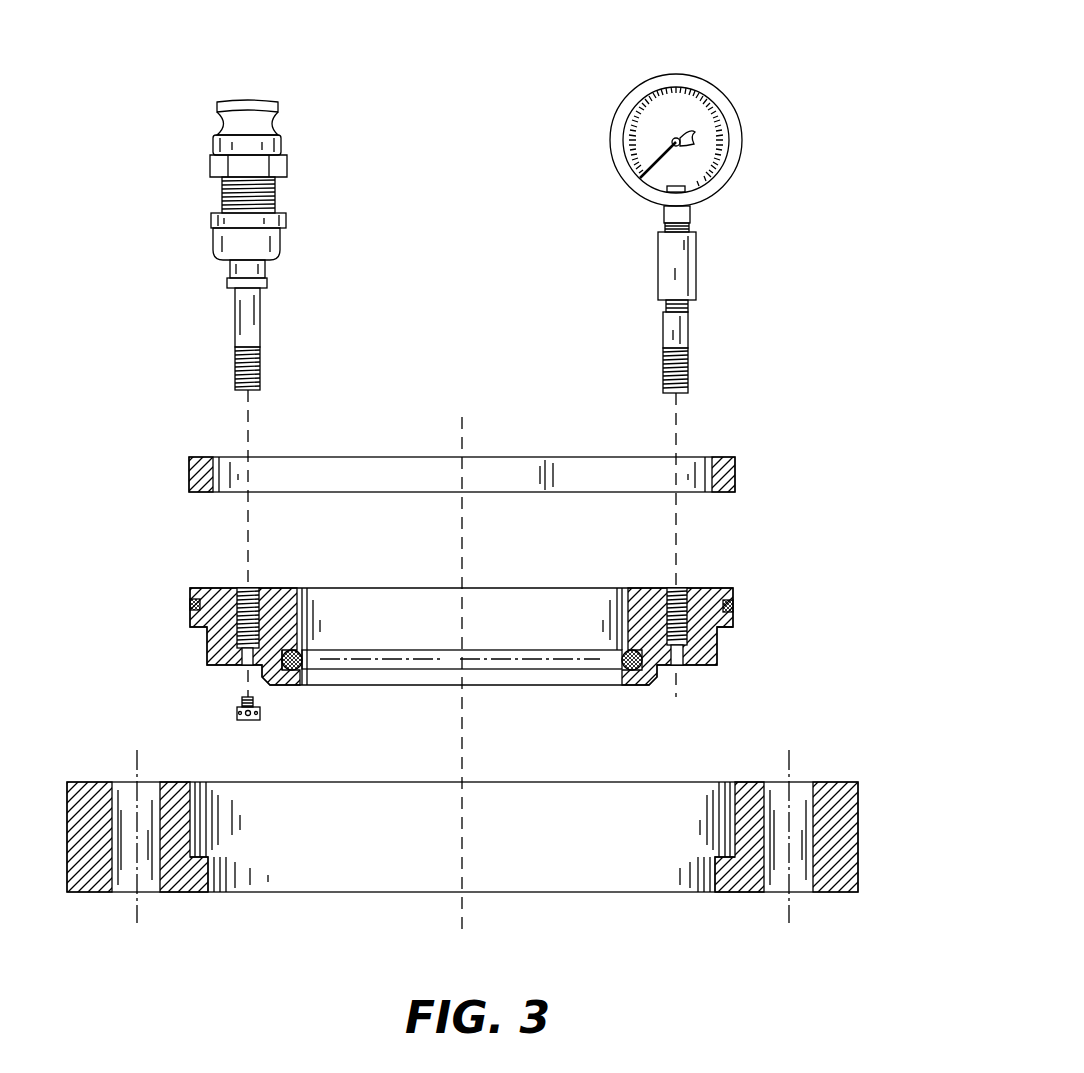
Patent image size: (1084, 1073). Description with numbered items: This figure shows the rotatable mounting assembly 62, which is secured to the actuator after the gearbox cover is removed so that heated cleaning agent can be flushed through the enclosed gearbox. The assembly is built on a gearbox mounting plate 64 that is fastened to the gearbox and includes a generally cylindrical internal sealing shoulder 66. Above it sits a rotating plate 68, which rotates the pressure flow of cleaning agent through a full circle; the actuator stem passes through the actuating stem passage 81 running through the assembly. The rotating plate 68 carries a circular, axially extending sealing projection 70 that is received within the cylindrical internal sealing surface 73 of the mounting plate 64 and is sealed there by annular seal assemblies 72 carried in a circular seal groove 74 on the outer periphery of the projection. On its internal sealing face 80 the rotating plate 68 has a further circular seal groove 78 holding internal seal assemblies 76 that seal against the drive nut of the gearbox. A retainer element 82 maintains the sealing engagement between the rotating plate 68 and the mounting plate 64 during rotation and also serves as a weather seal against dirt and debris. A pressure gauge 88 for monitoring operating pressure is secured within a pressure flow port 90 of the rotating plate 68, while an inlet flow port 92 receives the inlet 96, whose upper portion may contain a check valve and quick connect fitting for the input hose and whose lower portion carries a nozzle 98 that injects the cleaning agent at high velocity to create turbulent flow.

The rotatable mounting assembly 62 is at (147, 62).
The gearbox mounting plate 64 is at (434, 855).
The internal sealing shoulder 66 is at (188, 878).
The rotating plate 68 is at (462, 635).
The sealing projection 70 is at (190, 596).
The seal assemblies 72 is at (737, 605).
The internal sealing surface 73 is at (207, 810).
The circular seal groove 74 is at (732, 628).
The internal seal assemblies 76 is at (303, 662).
The circular seal groove 78 is at (282, 672).
The internal sealing face 80 is at (297, 590).
The actuating stem passage 81 is at (462, 420).
The retainer element 82 is at (201, 462).
The pressure gauge 88 is at (731, 110).
The pressure flow port 90 is at (672, 590).
The inlet flow port 92 is at (245, 590).
The inlet 96 is at (282, 241).
The nozzle 98 is at (237, 712).